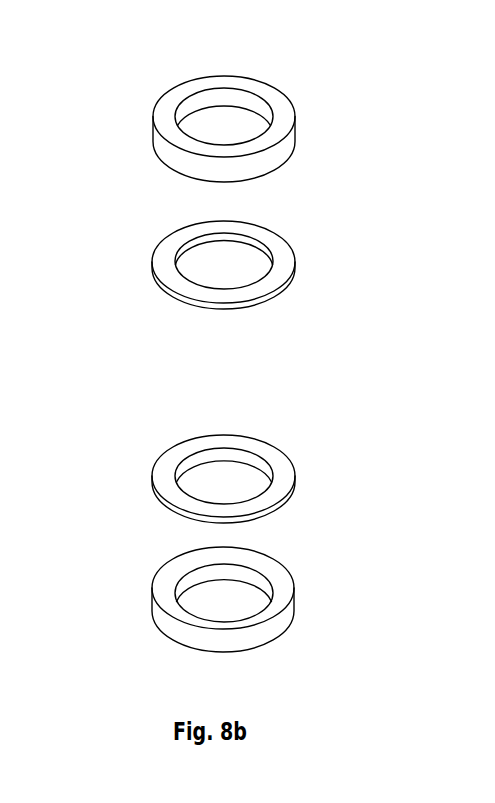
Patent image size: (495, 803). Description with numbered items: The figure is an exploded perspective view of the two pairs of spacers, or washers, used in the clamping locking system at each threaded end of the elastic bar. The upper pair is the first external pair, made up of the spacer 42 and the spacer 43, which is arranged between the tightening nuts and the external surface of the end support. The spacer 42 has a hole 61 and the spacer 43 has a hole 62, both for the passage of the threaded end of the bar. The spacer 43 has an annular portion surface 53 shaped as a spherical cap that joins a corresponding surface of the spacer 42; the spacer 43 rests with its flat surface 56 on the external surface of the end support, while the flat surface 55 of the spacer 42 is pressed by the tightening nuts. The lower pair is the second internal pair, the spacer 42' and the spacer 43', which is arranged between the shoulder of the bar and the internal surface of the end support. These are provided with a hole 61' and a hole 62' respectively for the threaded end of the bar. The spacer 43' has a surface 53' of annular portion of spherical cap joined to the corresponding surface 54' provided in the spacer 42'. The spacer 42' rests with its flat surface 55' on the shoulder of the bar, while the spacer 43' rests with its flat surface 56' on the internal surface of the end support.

The spacer 42 is at (259, 104).
The spacer 43 is at (238, 269).
The annular portion surface of spherical cap 53 is at (265, 242).
The flat surface 55 is at (191, 111).
The flat surface 56 is at (262, 310).
The hole 61 is at (254, 86).
The hole 62 is at (163, 261).
The spacer 42' is at (247, 621).
The spacer 43' is at (234, 470).
The surface of annular portion of spherical cap 53' is at (173, 515).
The corresponding surface 54' is at (287, 588).
The flat surface 55' is at (261, 641).
The flat surface 56' is at (257, 462).
The hole 61' is at (173, 628).
The hole 62' is at (192, 445).